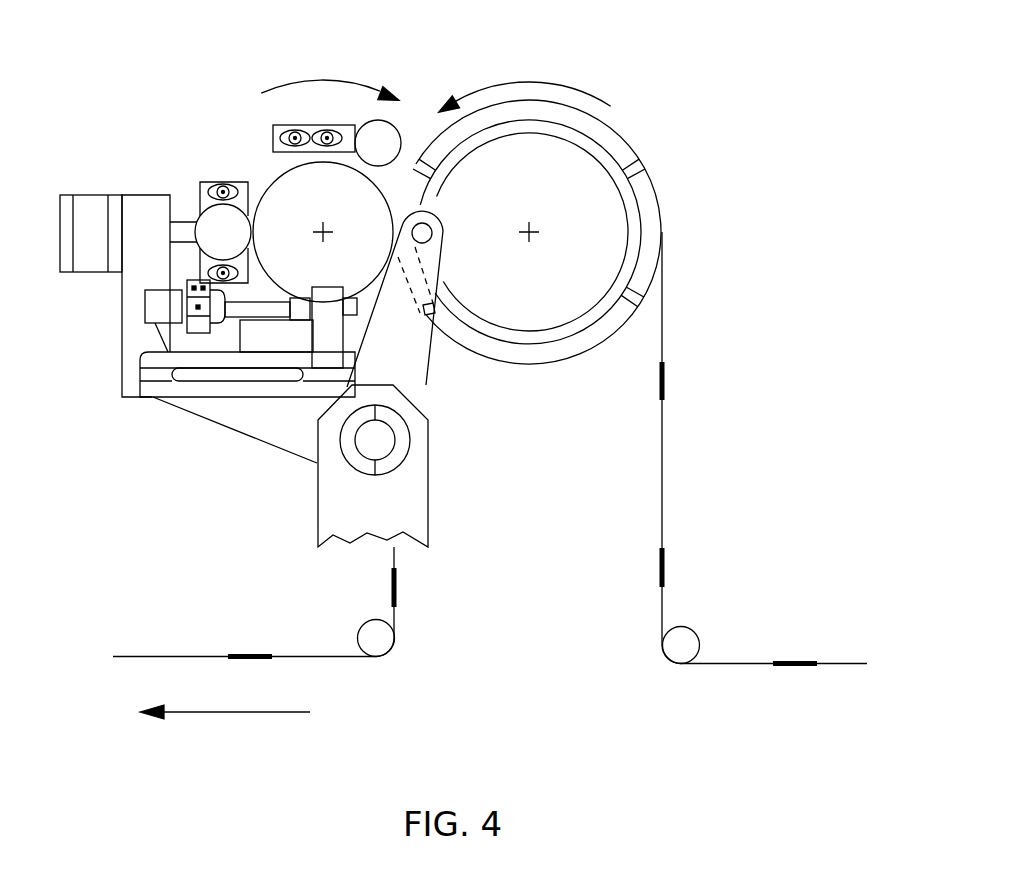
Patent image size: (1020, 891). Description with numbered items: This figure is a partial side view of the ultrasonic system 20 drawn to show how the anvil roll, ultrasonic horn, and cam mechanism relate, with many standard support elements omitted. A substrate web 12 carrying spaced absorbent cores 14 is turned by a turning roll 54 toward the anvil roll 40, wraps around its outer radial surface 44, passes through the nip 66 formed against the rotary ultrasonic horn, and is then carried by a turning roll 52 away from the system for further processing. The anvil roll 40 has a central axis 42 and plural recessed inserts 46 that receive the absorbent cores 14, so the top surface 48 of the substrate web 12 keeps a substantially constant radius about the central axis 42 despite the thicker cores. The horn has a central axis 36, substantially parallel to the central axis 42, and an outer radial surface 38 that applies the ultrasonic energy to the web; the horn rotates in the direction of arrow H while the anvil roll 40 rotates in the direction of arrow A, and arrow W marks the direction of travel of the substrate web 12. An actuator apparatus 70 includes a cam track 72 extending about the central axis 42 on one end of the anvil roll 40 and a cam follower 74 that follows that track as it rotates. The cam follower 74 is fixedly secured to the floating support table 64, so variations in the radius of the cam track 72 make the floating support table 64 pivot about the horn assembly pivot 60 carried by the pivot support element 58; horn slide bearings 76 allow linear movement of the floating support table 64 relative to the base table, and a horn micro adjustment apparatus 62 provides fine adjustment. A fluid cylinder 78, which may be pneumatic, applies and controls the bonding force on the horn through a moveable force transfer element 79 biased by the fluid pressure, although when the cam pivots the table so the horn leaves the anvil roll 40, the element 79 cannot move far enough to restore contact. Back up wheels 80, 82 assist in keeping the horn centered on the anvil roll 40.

The substrate web 12 is at (665, 497).
The absorbent cores 14 is at (667, 380).
The ultrasonic system 20 is at (142, 113).
The central axis 36 is at (320, 224).
The outer radial surface 38 is at (273, 190).
The anvil roll 40 is at (540, 388).
The central axis 42 is at (532, 233).
The outer radial surface 44 is at (670, 290).
The recessed inserts 46 is at (583, 132).
The top surface 48 is at (621, 124).
The turning roll 52 is at (358, 627).
The turning roll 54 is at (687, 627).
The pivot support element 58 is at (430, 480).
The horn assembly pivot 60 is at (410, 445).
The horn micro adjustment apparatus 62 is at (162, 323).
The floating support table 64 is at (188, 420).
The nip 66 is at (403, 128).
The actuator apparatus 70 is at (481, 391).
The cam track 72 is at (633, 221).
The cam follower 74 is at (428, 363).
The horn slide bearings 76 is at (140, 388).
The fluid cylinder 78 is at (85, 193).
The moveable force transfer element 79 is at (183, 220).
The back up wheel 80 is at (197, 208).
The back up wheel 82 is at (378, 120).
The arrow H is at (328, 70).
The arrow A is at (533, 82).
The web direction W is at (245, 713).